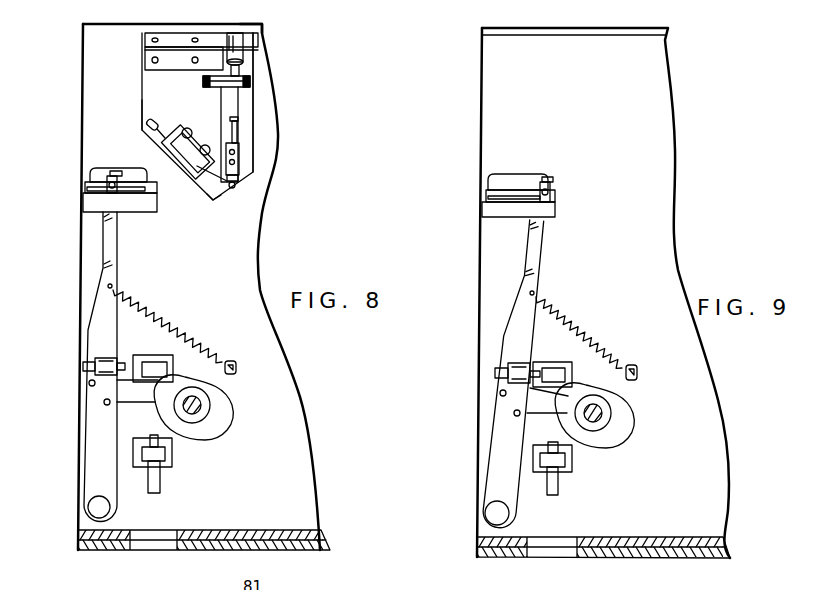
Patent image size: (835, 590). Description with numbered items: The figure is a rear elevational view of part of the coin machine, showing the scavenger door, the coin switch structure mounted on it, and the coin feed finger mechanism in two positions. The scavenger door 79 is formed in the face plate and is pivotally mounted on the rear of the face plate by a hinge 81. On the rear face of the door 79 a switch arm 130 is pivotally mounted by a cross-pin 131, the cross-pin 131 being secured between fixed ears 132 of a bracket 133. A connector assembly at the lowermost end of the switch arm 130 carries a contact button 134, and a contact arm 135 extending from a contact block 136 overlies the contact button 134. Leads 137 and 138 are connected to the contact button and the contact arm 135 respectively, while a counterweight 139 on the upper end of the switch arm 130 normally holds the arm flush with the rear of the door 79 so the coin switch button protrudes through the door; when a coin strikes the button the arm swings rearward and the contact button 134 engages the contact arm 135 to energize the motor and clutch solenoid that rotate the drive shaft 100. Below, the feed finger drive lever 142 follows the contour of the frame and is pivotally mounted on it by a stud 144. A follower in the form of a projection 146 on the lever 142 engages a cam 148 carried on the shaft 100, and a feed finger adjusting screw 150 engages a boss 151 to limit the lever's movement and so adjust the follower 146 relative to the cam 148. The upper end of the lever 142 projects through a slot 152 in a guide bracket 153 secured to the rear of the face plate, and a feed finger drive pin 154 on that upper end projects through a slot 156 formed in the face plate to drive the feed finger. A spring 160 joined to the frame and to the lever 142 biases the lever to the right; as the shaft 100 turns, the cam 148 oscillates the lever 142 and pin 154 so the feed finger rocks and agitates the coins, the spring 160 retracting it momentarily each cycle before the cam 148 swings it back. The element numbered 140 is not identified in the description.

In FIG. 8, the scavenger door 79 is at (150, 95).
In FIG. 8, the hinge 81 is at (178, 38).
In FIG. 8, the drive shaft 100 is at (199, 416).
In FIG. 8, the switch arm 130 is at (238, 105).
In FIG. 8, the cross-pin 131 is at (258, 60).
In FIG. 8, the fixed ears 132 is at (250, 78).
In FIG. 8, the bracket 133 is at (214, 74).
In FIG. 8, the contact button 134 is at (244, 172).
In FIG. 8, the contact arm 135 is at (214, 203).
In FIG. 8, the contact block 136 is at (183, 176).
In FIG. 8, the lead 137 is at (238, 123).
In FIG. 8, the lead 138 is at (156, 122).
In FIG. 8, the counterweight 139 is at (256, 33).
In FIG. 8, the bracket leg 140 is at (145, 128).
In FIG. 8, the feed finger drive lever 142 is at (110, 334).
In FIG. 9, the feed finger drive lever 142 is at (520, 320).
In FIG. 8, the stud 144 is at (106, 511).
In FIG. 9, the stud 144 is at (490, 511).
In FIG. 8, the follower projection 146 is at (135, 395).
In FIG. 9, the follower projection 146 is at (548, 407).
In FIG. 8, the cam 148 is at (223, 408).
In FIG. 9, the cam 148 is at (602, 443).
In FIG. 8, the feed finger adjusting screw 150 is at (85, 366).
In FIG. 8, the boss 151 is at (153, 360).
In FIG. 9, the boss 151 is at (553, 363).
In FIG. 8, the slot 152 is at (90, 192).
In FIG. 9, the slot 152 is at (505, 200).
In FIG. 8, the guide bracket 153 is at (100, 208).
In FIG. 9, the guide bracket 153 is at (557, 210).
In FIG. 8, the feed finger drive pin 154 is at (107, 184).
In FIG. 9, the feed finger drive pin 154 is at (551, 182).
In FIG. 8, the slot 156 is at (108, 165).
In FIG. 9, the slot 156 is at (512, 173).
In FIG. 8, the spring 160 is at (143, 308).
In FIG. 9, the spring 160 is at (573, 320).